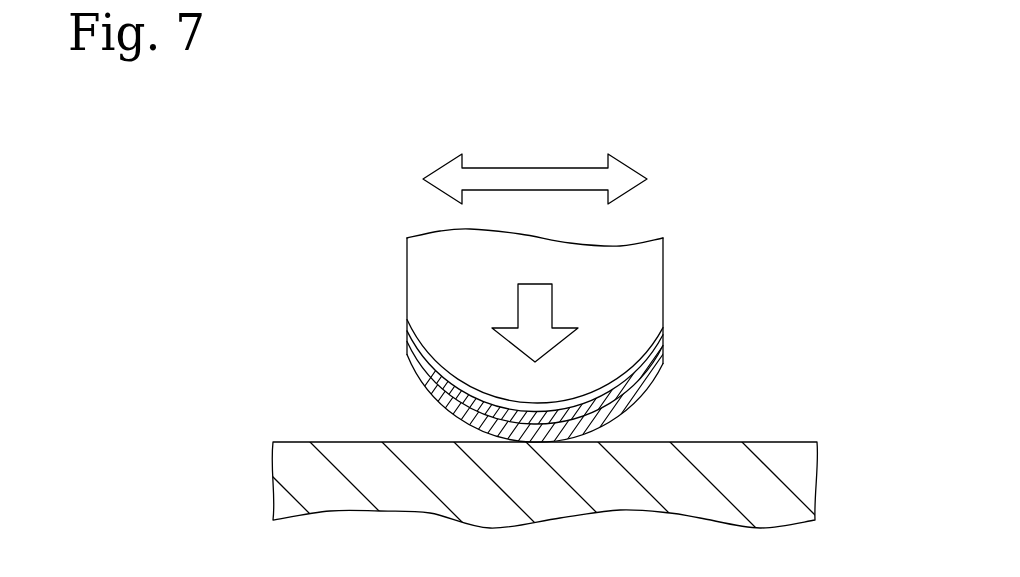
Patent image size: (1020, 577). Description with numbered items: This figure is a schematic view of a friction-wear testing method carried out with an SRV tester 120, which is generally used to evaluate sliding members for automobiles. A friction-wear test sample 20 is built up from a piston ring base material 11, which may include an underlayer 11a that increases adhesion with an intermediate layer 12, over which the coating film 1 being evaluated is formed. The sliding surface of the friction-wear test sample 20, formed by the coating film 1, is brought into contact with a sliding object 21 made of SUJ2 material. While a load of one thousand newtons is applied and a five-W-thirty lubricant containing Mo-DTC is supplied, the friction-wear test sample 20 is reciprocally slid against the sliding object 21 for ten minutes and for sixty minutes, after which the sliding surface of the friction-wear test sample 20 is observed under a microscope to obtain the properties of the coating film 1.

The SRV tester 120 is at (571, 267).
The friction-wear test sample 20 is at (571, 339).
The piston ring base material 11 is at (563, 316).
The underlayer 11a is at (624, 372).
The intermediate layer 12 is at (632, 398).
The coating film 1 is at (618, 423).
The sliding object 21 is at (805, 469).